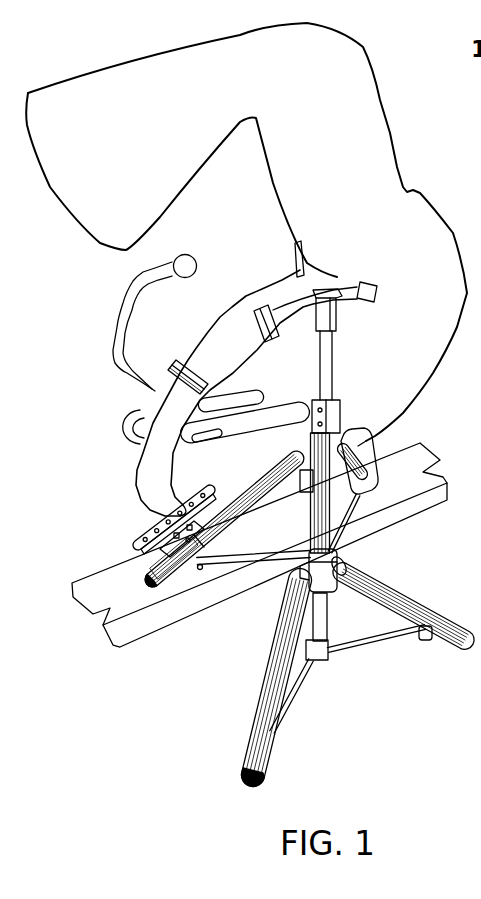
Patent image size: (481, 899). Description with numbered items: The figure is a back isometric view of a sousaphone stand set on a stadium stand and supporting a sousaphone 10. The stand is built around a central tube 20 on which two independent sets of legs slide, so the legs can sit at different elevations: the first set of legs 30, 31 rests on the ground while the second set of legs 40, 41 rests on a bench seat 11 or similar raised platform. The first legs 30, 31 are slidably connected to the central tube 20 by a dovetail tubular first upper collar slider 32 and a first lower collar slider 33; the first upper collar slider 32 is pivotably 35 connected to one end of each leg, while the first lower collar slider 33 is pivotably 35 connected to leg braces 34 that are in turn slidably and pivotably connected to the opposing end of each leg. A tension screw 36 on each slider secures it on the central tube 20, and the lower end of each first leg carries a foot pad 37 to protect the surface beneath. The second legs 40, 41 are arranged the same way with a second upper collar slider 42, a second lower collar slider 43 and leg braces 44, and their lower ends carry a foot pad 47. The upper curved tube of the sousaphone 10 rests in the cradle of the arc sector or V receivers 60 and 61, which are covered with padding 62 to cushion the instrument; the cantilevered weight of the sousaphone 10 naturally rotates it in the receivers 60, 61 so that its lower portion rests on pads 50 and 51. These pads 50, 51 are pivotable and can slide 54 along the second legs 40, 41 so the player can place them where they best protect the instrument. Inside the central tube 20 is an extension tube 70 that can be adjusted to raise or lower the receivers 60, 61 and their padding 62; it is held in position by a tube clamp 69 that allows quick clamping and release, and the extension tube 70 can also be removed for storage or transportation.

The sousaphone 10 is at (100, 262).
The bench seat 11 is at (98, 574).
The central tube 20 is at (330, 507).
The first leg 30 is at (270, 680).
The first leg 31 is at (413, 600).
The first upper collar slider 32 is at (330, 592).
The first lower collar slider 33 is at (323, 656).
The leg brace 34 is at (408, 644).
The pivot connection 35 is at (425, 640).
The tension screw 36 is at (346, 566).
The foot pad 37 is at (247, 779).
The second leg 40 is at (163, 583).
The second leg 41 is at (408, 448).
The second upper collar slider 42 is at (307, 492).
The second lower collar slider 43 is at (303, 568).
The leg brace 44 is at (227, 571).
The foot pad 47 is at (150, 588).
The pad 50 is at (147, 537).
The pad 51 is at (378, 432).
The slide 54 is at (162, 548).
The arc sector or V receiver 60 is at (262, 352).
The arc sector or V receiver 61 is at (368, 288).
The padding 62 is at (256, 316).
The tube clamp 69 is at (313, 406).
The extension tube 70 is at (334, 350).